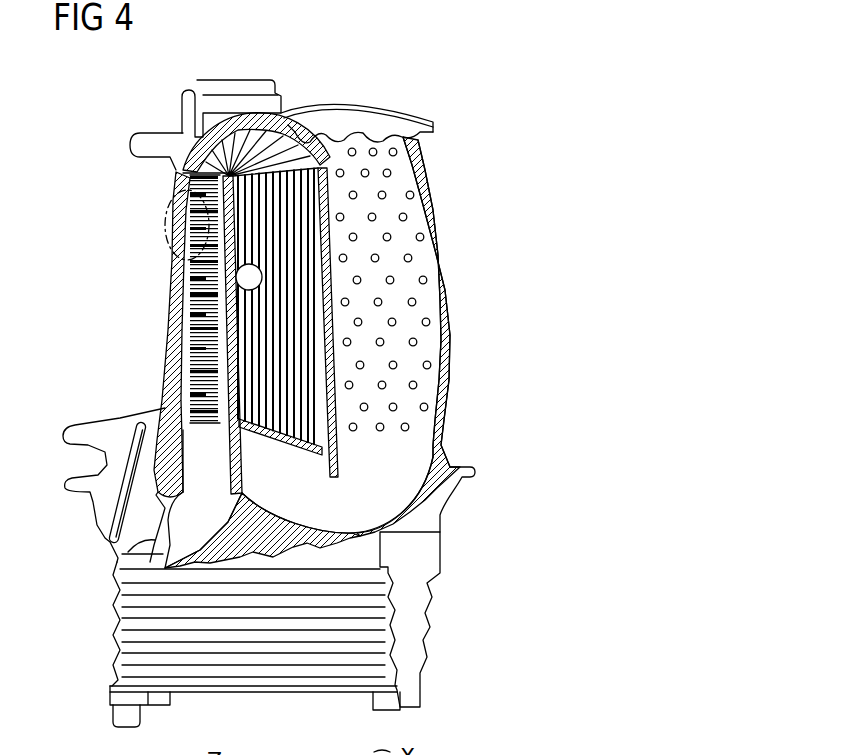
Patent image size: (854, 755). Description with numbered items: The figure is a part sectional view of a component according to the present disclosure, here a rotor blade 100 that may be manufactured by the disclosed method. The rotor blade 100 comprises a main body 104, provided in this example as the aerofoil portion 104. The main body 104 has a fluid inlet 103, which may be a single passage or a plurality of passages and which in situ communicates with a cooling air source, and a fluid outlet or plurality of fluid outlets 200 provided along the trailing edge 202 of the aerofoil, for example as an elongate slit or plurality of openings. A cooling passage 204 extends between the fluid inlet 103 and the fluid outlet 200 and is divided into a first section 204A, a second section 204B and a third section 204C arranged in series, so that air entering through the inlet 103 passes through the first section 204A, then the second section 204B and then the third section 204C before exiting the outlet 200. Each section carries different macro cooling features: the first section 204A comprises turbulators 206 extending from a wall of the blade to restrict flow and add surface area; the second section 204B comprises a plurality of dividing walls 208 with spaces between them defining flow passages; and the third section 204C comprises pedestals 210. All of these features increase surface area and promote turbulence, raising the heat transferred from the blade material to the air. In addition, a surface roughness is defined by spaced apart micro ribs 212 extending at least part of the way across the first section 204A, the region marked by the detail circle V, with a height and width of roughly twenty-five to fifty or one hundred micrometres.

The rotor blade 100 is at (472, 95).
The fluid inlet 103 is at (116, 563).
The main body 104 is at (440, 280).
The fluid outlet 200 is at (440, 196).
The trailing edge 202 is at (447, 327).
The cooling passage 204 is at (350, 518).
The first section 204A is at (193, 380).
The second section 204B is at (237, 338).
The third section 204C is at (430, 387).
The turbulators 206 is at (193, 298).
The dividing walls 208 is at (277, 425).
The pedestals 210 is at (408, 258).
The micro ribs 212 is at (207, 435).
The detail view marker V is at (168, 228).